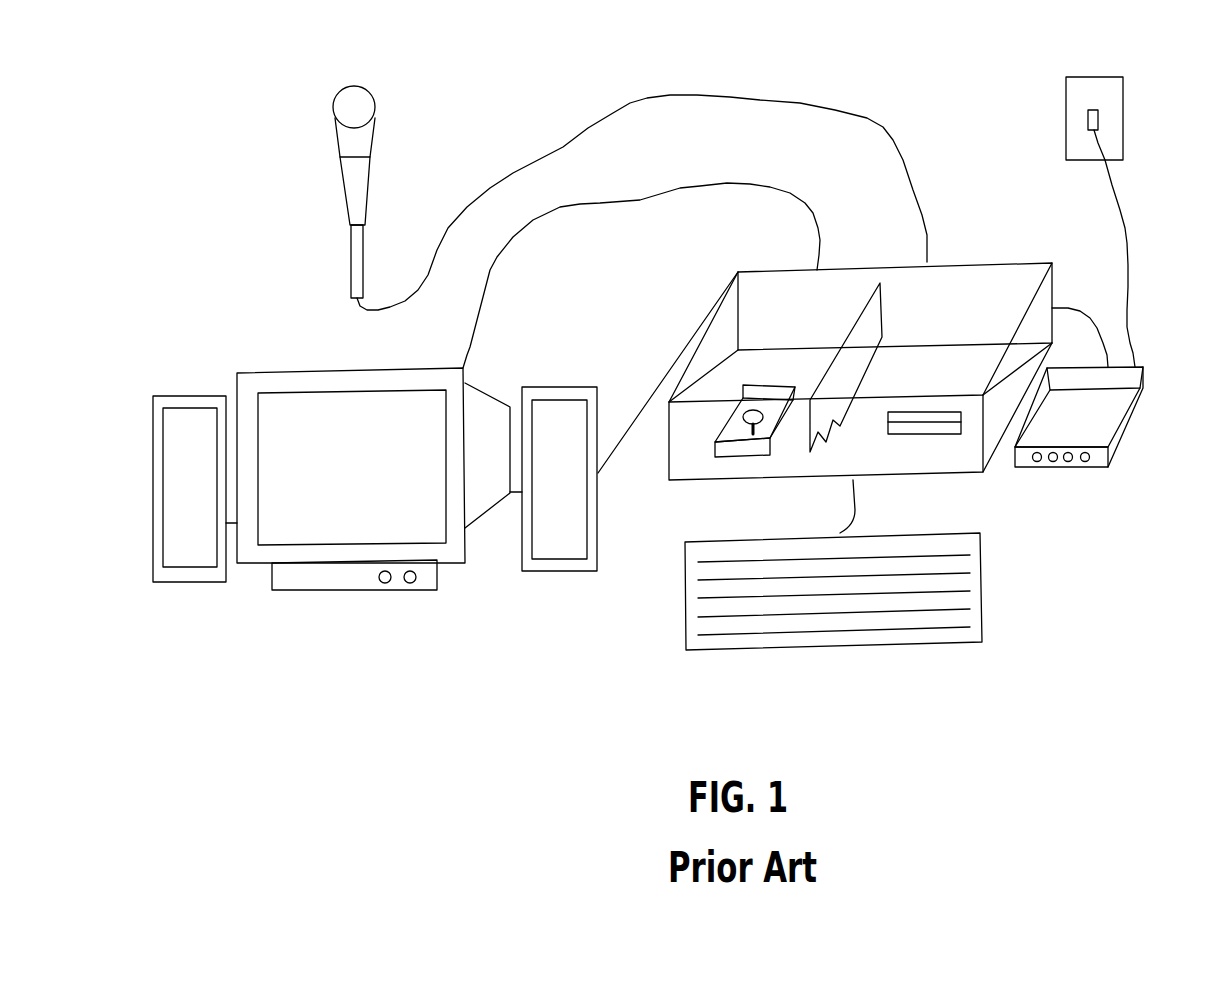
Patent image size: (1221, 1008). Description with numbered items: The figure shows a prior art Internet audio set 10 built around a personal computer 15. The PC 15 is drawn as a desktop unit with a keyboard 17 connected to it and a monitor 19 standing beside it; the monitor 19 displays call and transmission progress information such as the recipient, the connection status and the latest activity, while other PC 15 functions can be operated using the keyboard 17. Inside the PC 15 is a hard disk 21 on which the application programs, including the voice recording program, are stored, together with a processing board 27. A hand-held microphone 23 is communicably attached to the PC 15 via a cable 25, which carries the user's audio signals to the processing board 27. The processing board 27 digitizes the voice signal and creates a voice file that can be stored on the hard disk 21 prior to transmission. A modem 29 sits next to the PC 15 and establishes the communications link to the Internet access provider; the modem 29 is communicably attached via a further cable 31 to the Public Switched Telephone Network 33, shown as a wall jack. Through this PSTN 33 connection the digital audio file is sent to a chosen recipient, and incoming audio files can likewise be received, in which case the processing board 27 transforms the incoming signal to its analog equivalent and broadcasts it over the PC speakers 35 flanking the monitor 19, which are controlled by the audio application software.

The Internet audio set 10 is at (380, 765).
The personal computer 15 is at (968, 474).
The keyboard 17 is at (893, 643).
The monitor 19 is at (447, 563).
The hard disk 21 is at (735, 447).
The microphone 23 is at (348, 175).
The cable 25 is at (737, 95).
The processing board 27 is at (873, 332).
The modem 29 is at (1132, 418).
The cable 31 is at (1127, 238).
The Public Switched Telephone Network 33 is at (1123, 132).
The PC speaker 35 is at (188, 582).